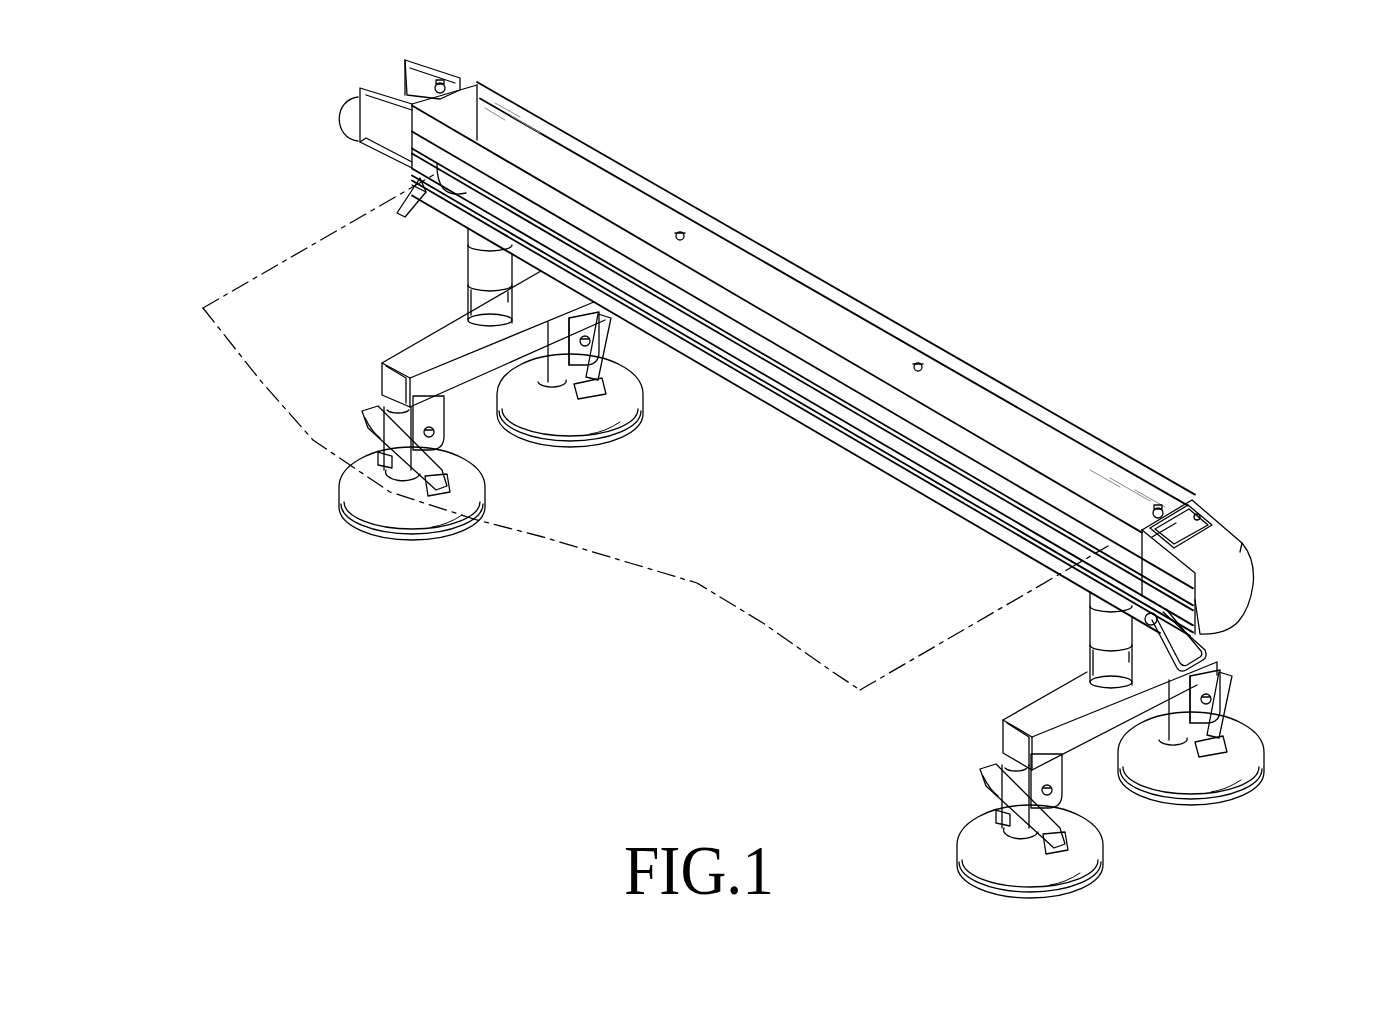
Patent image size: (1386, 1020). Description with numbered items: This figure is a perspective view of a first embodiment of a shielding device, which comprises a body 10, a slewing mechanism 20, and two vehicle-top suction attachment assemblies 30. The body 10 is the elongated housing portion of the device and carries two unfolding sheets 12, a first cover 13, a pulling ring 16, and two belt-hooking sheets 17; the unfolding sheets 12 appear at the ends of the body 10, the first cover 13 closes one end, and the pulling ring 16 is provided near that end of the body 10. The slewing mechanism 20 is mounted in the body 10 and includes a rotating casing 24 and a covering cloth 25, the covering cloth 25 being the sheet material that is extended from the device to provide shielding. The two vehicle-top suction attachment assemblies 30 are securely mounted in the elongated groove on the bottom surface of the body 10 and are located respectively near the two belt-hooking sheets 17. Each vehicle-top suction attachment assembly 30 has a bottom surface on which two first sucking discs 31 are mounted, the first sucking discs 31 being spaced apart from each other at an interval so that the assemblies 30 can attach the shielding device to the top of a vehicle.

The body 10 is at (783, 247).
The unfolding sheet 12 is at (405, 80).
The first cover 13 is at (1238, 576).
The pulling ring 16 is at (342, 120).
The belt-hooking sheet 17 is at (1200, 650).
The slewing mechanism 20 is at (422, 165).
The rotating casing 24 is at (402, 128).
The covering cloth 25 is at (257, 278).
The vehicle-top suction attachment assembly 30 is at (1082, 749).
The first sucking disc 31 is at (360, 500).